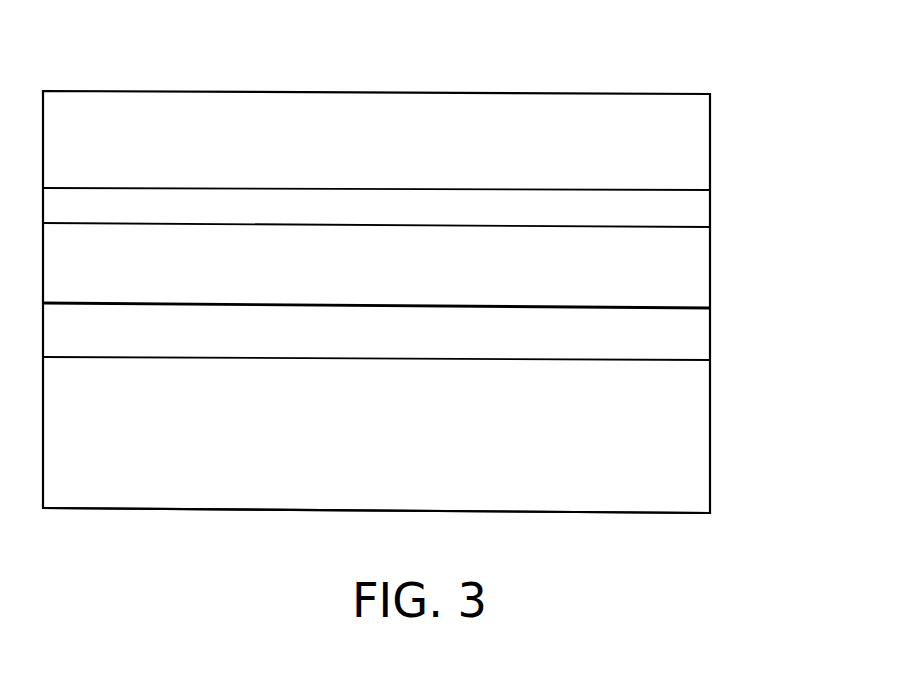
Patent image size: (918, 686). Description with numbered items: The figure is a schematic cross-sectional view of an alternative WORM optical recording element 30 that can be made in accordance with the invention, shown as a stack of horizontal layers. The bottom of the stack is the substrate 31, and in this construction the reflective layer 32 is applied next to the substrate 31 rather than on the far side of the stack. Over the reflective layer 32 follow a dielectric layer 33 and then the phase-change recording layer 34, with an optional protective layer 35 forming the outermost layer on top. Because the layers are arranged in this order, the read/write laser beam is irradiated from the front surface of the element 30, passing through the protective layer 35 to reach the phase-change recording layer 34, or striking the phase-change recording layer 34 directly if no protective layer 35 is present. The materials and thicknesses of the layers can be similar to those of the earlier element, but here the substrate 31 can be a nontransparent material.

The WORM optical recording element 30 is at (376, 265).
The substrate 31 is at (445, 592).
The reflective layer 32 is at (446, 468).
The dielectric layer 33 is at (446, 417).
The phase-change recording layer 34 is at (446, 353).
The protective layer 35 is at (446, 286).